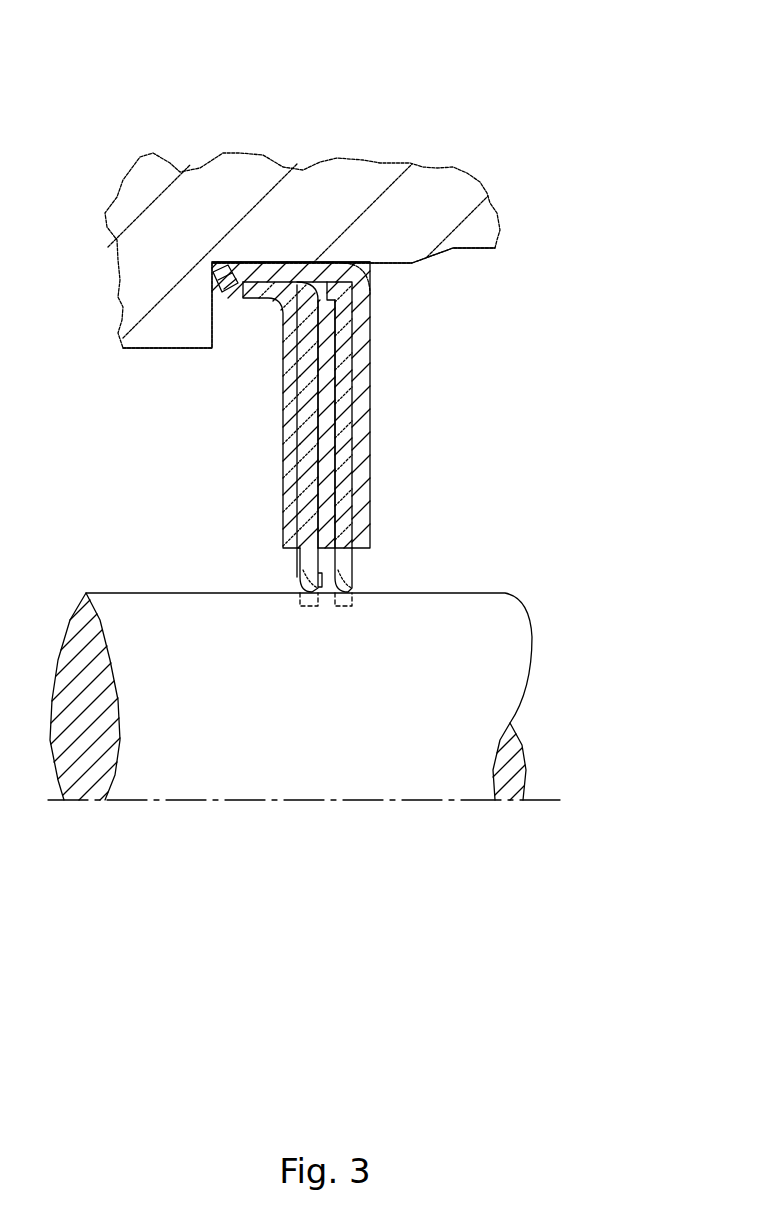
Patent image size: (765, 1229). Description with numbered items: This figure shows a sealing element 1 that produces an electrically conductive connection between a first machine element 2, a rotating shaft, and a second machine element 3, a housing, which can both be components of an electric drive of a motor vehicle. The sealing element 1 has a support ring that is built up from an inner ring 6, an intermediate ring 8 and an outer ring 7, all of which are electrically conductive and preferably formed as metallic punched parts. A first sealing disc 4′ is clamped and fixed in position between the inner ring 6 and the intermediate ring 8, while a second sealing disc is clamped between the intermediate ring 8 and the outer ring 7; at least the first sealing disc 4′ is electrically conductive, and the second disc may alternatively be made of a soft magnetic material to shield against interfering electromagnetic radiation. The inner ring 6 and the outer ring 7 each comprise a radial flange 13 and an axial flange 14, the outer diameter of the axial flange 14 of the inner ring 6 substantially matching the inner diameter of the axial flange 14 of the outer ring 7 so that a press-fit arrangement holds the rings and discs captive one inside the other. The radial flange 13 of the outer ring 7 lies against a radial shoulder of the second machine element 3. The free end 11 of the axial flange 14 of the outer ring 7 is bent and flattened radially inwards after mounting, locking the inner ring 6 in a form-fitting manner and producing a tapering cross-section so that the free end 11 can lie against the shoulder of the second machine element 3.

The sealing element 1 is at (503, 332).
The first machine element 2 is at (440, 675).
The second machine element 3 is at (441, 220).
The first sealing disc 4′ is at (350, 578).
The inner ring 6 is at (293, 423).
The outer ring 7 is at (365, 442).
The intermediate ring 8 is at (326, 314).
The free end 11 is at (228, 268).
The radial flange 13 is at (358, 377).
The axial flange 14 is at (309, 263).